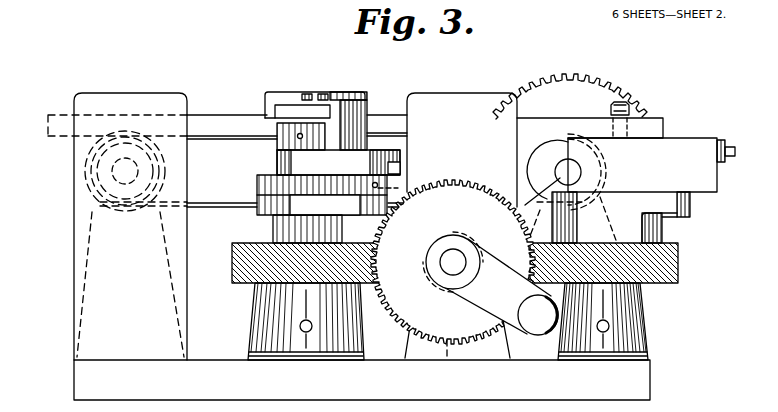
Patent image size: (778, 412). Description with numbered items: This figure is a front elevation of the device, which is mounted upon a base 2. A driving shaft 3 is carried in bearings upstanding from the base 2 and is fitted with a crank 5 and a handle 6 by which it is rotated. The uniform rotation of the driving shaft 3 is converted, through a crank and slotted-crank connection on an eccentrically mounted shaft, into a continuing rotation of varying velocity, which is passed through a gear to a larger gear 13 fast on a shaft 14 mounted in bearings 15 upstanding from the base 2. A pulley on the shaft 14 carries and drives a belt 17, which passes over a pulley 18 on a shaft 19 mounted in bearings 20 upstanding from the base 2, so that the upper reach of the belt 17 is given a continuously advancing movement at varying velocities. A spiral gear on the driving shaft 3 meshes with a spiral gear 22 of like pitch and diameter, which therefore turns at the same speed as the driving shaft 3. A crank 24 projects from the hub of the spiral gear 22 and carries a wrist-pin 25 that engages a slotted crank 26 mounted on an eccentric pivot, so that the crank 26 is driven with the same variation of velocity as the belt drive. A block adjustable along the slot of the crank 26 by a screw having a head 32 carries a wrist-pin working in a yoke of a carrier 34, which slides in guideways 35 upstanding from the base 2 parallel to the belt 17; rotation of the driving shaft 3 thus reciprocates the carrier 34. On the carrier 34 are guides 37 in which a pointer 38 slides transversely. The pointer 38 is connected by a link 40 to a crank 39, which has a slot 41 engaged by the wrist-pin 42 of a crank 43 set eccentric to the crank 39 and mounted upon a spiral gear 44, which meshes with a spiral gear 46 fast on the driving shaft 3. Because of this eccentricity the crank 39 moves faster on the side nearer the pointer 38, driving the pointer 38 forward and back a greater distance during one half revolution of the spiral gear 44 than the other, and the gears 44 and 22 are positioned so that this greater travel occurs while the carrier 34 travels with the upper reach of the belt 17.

The base 2 is at (362, 380).
The driving shaft 3 is at (440, 268).
The crank 5 is at (488, 284).
The handle 6 is at (535, 326).
The larger gear 13 is at (618, 98).
The shaft 14 is at (548, 210).
The bearings 15 is at (600, 163).
The belt 17 is at (212, 202).
The pulley 18 is at (88, 157).
The shaft 19 is at (122, 171).
The bearings 20 is at (92, 212).
The spiral gear 22 is at (665, 256).
The crank 24 is at (662, 214).
The wrist-pin 25 is at (690, 208).
The slotted crank 26 is at (700, 182).
The head 32 is at (722, 141).
The carrier 34 is at (425, 127).
The guideways 35 is at (76, 118).
The guides 37 is at (338, 110).
The pointer 38 is at (300, 110).
The crank 39 is at (328, 169).
The link 40 is at (350, 108).
The slot 41 is at (418, 158).
The wrist-pin 42 is at (400, 186).
The crank 43 is at (352, 206).
The spiral gear 44 is at (245, 276).
The spiral gear 46 is at (453, 262).